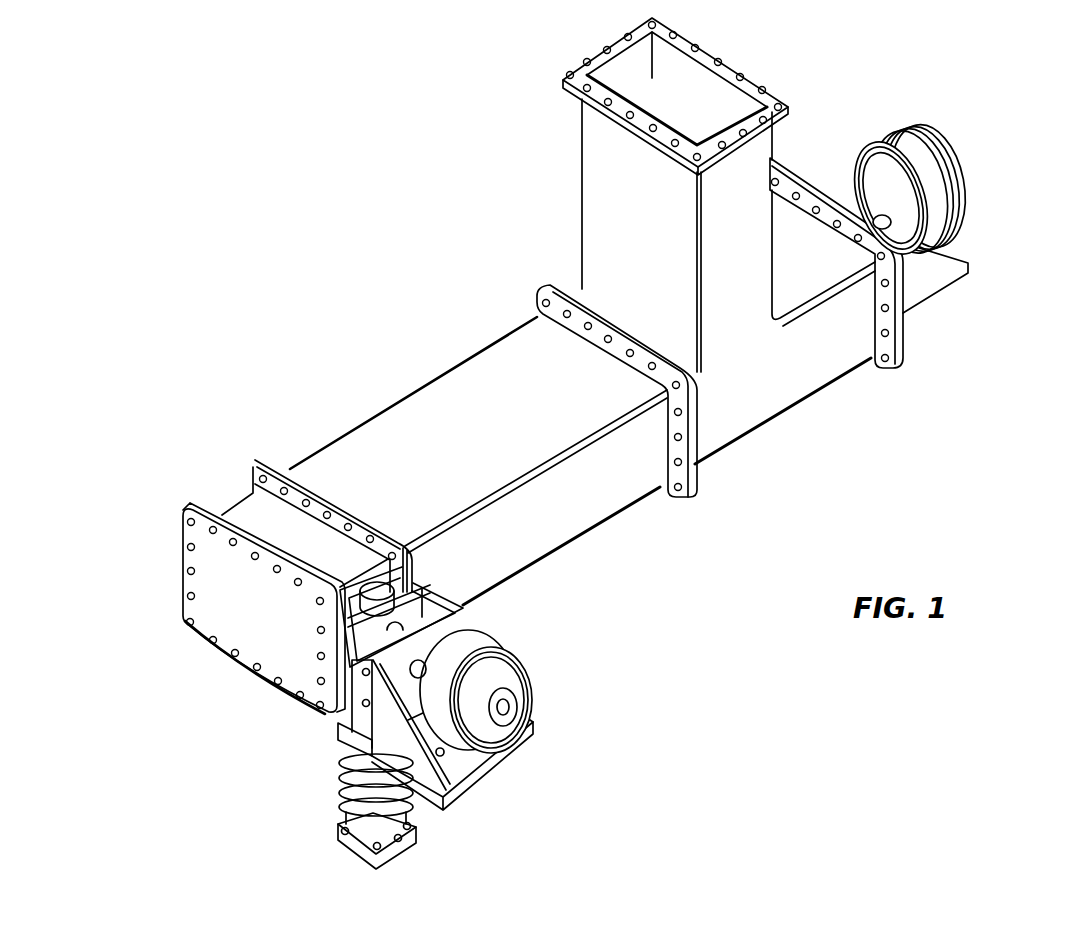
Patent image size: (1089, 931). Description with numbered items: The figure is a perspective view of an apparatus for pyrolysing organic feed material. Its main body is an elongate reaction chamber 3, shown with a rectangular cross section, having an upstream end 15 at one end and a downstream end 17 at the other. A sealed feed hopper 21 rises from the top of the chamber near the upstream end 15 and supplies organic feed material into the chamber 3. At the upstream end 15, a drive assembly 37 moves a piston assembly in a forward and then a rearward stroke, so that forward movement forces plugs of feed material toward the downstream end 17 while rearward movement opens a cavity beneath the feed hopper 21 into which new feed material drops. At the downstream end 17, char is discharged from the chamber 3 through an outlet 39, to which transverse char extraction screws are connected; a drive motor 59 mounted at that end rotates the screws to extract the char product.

The elongate reaction chamber 3 is at (453, 370).
The upstream end 15 is at (706, 471).
The downstream end 17 is at (218, 480).
The feed hopper 21 is at (581, 169).
The drive assembly 37 is at (965, 153).
The outlet 39 is at (373, 598).
The drive motor 59 is at (527, 684).